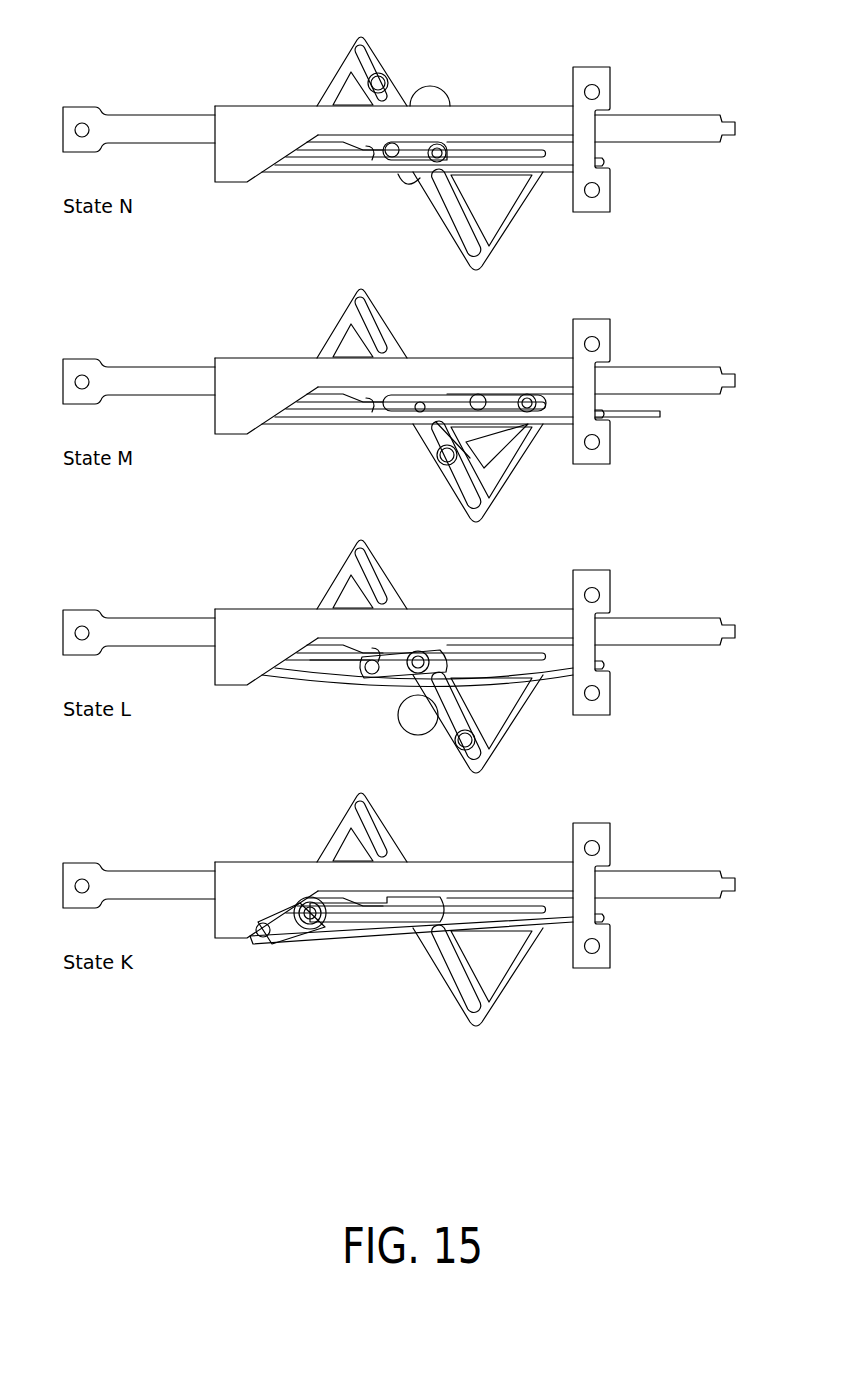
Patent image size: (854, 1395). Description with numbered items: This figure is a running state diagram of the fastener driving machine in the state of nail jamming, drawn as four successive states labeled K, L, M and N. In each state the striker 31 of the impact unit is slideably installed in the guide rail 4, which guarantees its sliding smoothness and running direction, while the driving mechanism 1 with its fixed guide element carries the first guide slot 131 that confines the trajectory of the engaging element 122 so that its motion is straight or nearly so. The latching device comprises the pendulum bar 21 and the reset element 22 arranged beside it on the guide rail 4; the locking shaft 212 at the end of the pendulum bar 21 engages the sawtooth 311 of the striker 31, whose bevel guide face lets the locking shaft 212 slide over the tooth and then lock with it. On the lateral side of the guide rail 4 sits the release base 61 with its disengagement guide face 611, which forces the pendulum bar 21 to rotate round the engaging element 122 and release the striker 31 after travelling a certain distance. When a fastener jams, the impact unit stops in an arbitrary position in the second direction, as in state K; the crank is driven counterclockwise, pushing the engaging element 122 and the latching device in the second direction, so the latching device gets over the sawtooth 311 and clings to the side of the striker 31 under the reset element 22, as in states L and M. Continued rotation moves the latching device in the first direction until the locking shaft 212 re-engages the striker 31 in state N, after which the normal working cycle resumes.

The driving mechanism 1 is at (394, 531).
The guide rail 4 is at (542, 104).
The pendulum bar 21 is at (413, 161).
The reset element 22 is at (330, 170).
The striker 31 is at (160, 137).
The release base 61 is at (258, 148).
The engaging element 122 is at (388, 84).
The first guide slot 131 is at (376, 70).
The locking shaft 212 is at (392, 158).
The sawtooth 311 is at (370, 153).
The disengagement guide face 611 is at (264, 150).